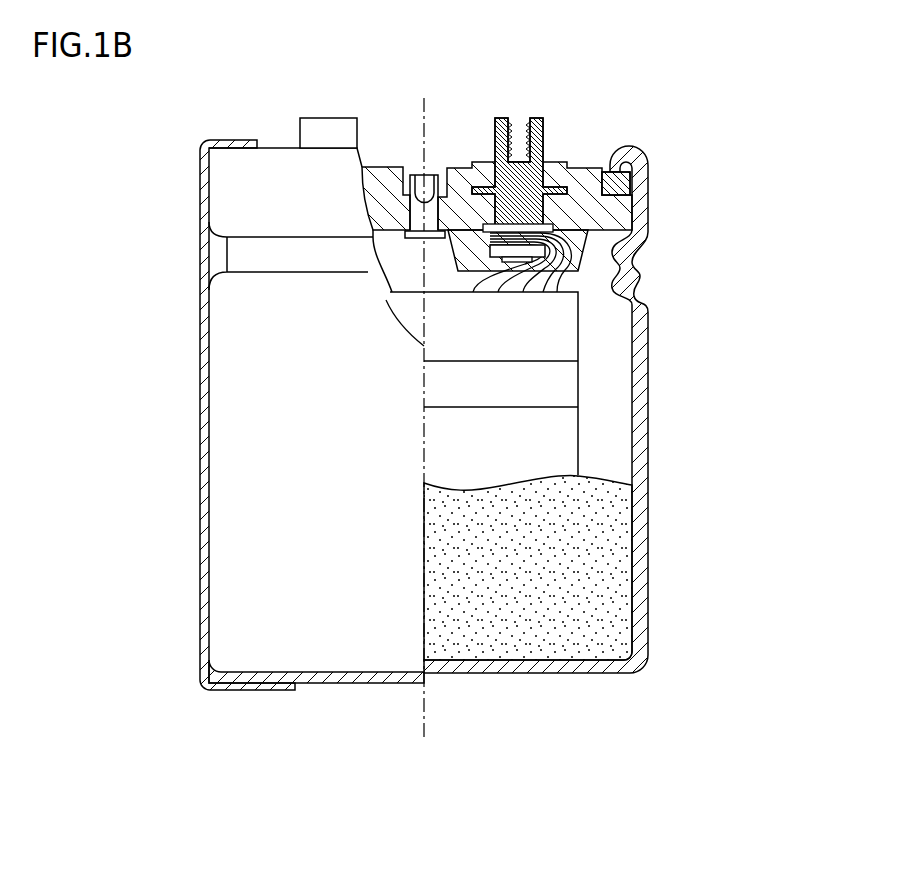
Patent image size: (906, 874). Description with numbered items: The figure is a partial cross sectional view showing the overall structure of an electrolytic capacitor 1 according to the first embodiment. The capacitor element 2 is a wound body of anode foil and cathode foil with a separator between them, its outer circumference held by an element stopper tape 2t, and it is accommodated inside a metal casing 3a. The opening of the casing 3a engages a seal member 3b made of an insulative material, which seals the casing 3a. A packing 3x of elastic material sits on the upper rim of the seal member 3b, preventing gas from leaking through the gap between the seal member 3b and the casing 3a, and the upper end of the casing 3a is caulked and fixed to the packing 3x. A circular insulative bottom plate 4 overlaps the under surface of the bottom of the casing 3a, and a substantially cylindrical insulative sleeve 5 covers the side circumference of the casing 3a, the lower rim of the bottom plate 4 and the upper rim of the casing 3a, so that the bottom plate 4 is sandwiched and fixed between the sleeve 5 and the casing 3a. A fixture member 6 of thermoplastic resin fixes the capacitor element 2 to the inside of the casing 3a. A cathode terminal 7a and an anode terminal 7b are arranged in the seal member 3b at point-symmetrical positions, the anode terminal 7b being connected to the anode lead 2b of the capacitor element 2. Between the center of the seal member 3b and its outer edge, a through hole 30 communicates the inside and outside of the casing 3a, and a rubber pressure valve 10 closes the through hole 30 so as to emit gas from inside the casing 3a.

The electrolytic capacitor 1 is at (676, 97).
The capacitor element 2 is at (558, 450).
The element stopper tape 2t is at (558, 386).
The anode lead 2b is at (577, 263).
The casing 3a is at (353, 631).
The seal member 3b is at (607, 213).
The packing 3x is at (634, 186).
The bottom plate 4 is at (342, 678).
The sleeve 5 is at (208, 409).
The fixture member 6 is at (603, 553).
The cathode terminal 7a is at (328, 135).
The anode terminal 7b is at (536, 125).
The pressure valve 10 is at (418, 172).
The through hole 30 is at (412, 237).